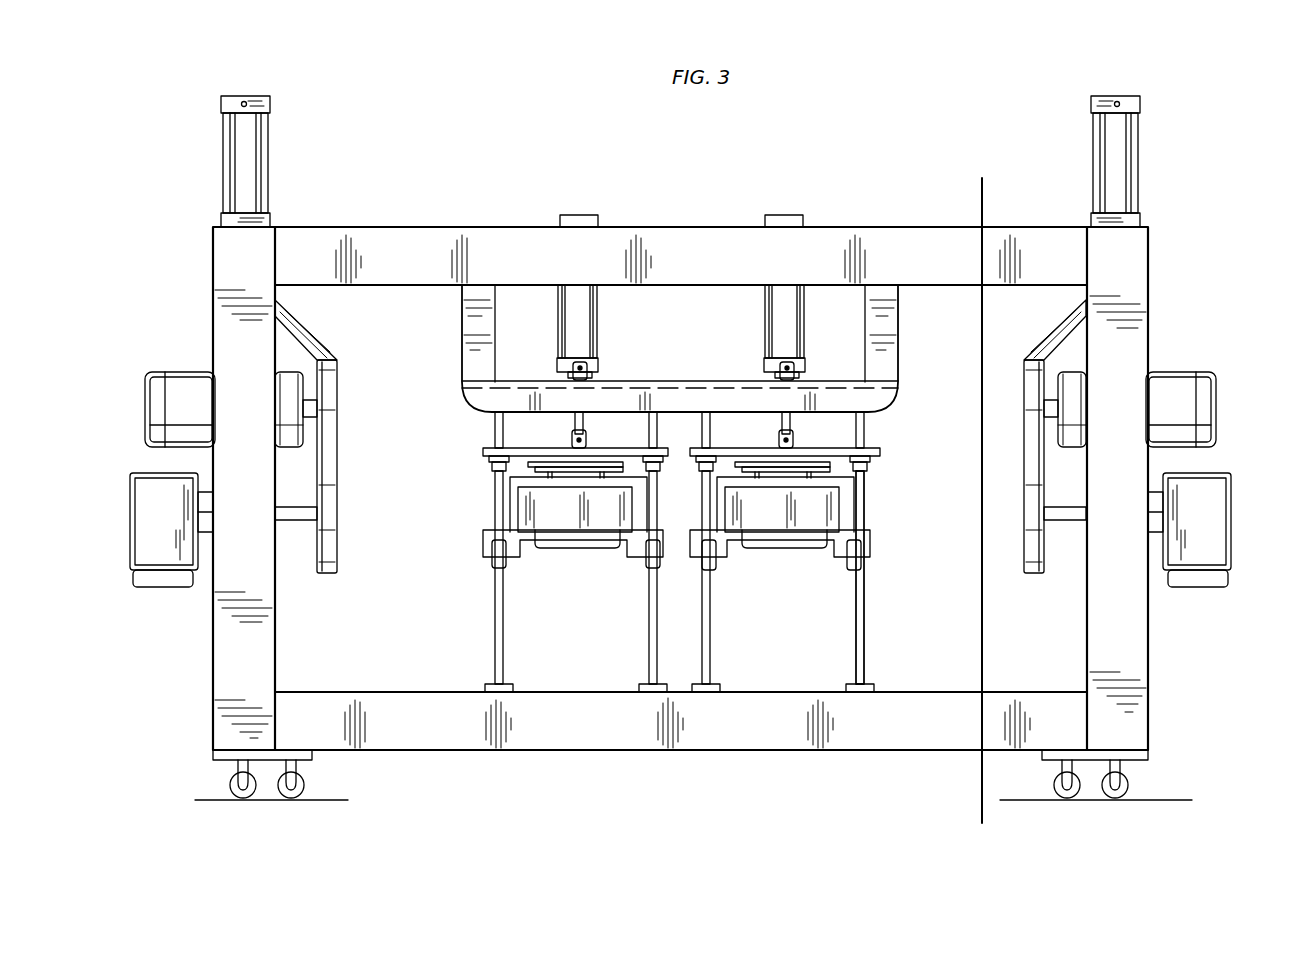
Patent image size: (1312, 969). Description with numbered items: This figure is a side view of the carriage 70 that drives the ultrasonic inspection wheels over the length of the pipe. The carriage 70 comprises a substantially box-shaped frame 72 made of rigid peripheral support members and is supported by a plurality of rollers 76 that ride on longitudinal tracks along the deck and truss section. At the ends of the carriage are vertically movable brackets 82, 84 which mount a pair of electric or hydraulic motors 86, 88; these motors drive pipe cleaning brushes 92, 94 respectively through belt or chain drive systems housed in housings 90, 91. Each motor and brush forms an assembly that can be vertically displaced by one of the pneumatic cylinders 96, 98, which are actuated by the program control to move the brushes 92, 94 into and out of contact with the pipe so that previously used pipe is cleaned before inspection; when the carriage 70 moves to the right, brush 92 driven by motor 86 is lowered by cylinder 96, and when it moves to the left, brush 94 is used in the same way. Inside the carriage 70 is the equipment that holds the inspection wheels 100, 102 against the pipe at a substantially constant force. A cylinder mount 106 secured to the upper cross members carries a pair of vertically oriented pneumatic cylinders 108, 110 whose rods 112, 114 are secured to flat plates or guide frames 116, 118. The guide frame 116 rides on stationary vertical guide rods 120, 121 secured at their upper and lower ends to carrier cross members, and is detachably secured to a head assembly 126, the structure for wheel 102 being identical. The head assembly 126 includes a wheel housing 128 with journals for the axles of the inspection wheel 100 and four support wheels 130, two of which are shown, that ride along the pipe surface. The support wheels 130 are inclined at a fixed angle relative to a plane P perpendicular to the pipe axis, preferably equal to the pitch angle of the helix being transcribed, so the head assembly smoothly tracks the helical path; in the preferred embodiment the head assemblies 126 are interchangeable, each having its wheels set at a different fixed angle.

The carriage 70 is at (666, 218).
The box-shaped frame 72 is at (858, 228).
The rollers 76 is at (245, 798).
The vertically movable bracket 82 is at (1038, 354).
The vertically movable bracket 84 is at (326, 351).
The motor 86 is at (1205, 370).
The motor 88 is at (172, 372).
The housing 90 is at (1034, 530).
The housing 91 is at (337, 562).
The pipe cleaning brush 92 is at (1218, 588).
The pipe cleaning brush 94 is at (160, 585).
The pneumatic cylinder 96 is at (1128, 182).
The pneumatic cylinder 98 is at (268, 178).
The inspection wheel 100 is at (786, 555).
The inspection wheel 102 is at (600, 555).
The cylinder mount 106 is at (882, 350).
The pneumatic cylinder 108 is at (790, 342).
The pneumatic cylinder 110 is at (592, 348).
The rod 112 is at (792, 435).
The rod 114 is at (586, 435).
The guide frame 116 is at (848, 449).
The guide frame 118 is at (522, 447).
The guide rod 120 is at (707, 487).
The guide rod 121 is at (862, 484).
The head assembly 126 is at (858, 520).
The wheel housing 128 is at (812, 512).
The support wheels 130 is at (708, 568).
The plane P is at (984, 200).